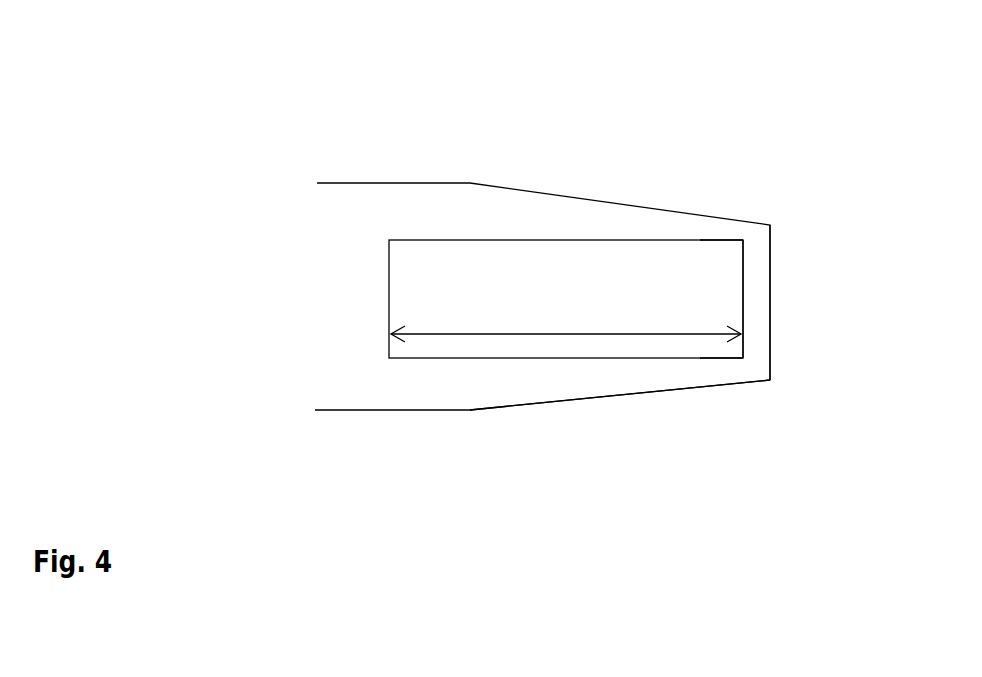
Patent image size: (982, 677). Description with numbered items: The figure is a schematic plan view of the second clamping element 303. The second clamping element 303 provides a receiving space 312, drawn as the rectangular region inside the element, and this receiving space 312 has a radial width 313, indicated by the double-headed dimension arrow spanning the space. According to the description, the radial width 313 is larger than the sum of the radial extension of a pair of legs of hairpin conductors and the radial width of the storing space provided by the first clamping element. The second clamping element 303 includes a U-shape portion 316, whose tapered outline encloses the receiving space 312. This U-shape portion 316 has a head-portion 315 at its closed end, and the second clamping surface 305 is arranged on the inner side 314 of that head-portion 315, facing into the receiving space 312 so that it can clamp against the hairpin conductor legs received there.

The second clamping element 303 is at (359, 215).
The receiving space 312 is at (498, 270).
The second clamping surface 305 is at (736, 276).
The inner side 314 is at (704, 292).
The head-portion 315 is at (773, 254).
The U-shape portion 316 is at (702, 409).
The radial width 313 is at (498, 334).